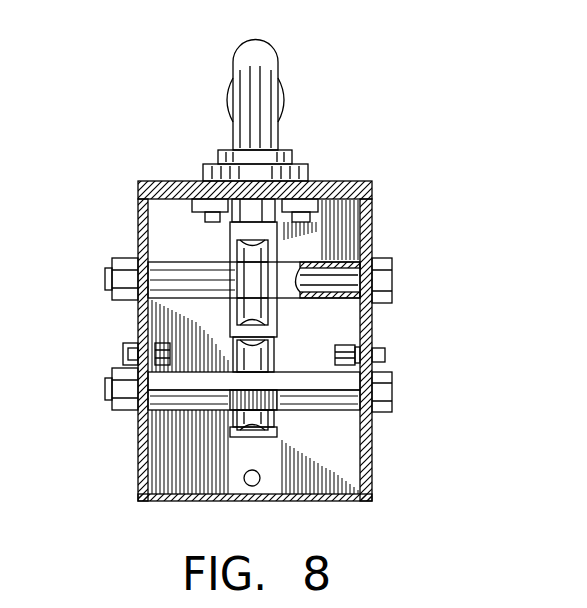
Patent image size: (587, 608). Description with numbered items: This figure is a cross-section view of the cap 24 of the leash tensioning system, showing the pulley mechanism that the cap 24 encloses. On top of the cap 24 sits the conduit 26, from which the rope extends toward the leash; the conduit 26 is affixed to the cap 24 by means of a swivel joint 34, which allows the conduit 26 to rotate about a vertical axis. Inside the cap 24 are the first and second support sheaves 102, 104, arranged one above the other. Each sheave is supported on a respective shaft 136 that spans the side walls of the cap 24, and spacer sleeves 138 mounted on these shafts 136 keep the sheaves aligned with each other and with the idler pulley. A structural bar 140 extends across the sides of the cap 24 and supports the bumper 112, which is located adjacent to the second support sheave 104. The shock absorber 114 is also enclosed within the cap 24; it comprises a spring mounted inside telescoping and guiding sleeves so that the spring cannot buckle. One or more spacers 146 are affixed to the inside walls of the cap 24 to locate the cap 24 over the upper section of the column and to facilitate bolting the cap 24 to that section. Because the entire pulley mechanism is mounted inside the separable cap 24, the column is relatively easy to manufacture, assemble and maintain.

The cap 24 is at (358, 182).
The conduit 26 is at (283, 52).
The swivel joint 34 is at (210, 163).
The first support sheave 102 is at (232, 257).
The second support sheave 104 is at (228, 428).
The bumper 112 is at (228, 396).
The shock absorber 114 is at (228, 315).
The shaft 136 is at (368, 303).
The spacer sleeve 138 is at (293, 263).
The structural bar 140 is at (332, 383).
The spacer 146 is at (305, 415).